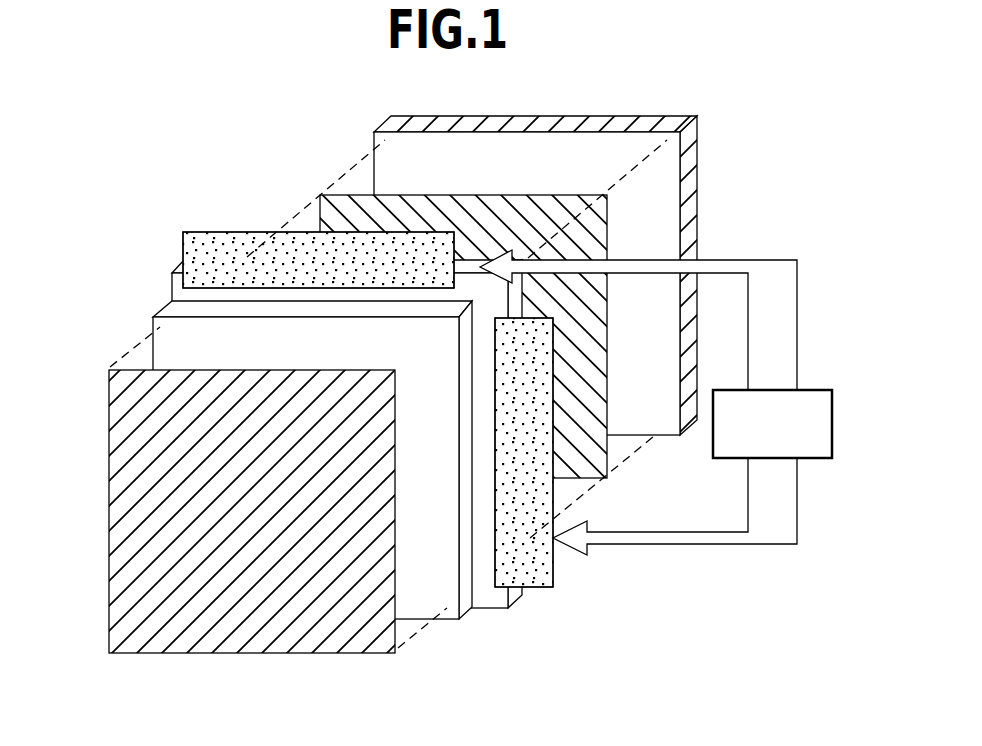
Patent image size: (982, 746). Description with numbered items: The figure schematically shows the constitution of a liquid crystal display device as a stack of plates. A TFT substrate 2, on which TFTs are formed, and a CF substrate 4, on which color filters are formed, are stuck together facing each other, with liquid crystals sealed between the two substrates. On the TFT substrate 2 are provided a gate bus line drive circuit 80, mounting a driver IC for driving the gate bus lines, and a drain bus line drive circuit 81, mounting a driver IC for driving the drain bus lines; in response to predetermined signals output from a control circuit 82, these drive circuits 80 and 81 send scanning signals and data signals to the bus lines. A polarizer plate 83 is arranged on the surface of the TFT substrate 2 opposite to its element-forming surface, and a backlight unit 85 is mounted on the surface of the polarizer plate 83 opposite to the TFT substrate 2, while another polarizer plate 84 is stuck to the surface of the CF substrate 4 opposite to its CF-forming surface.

The TFT substrate 2 is at (495, 597).
The CF substrate 4 is at (452, 615).
The gate bus line drive circuit 80 is at (540, 577).
The drain bus line drive circuit 81 is at (207, 237).
The control circuit 82 is at (820, 388).
The polarizer plate 83 is at (597, 460).
The polarizer plate 84 is at (117, 615).
The backlight unit 85 is at (697, 163).